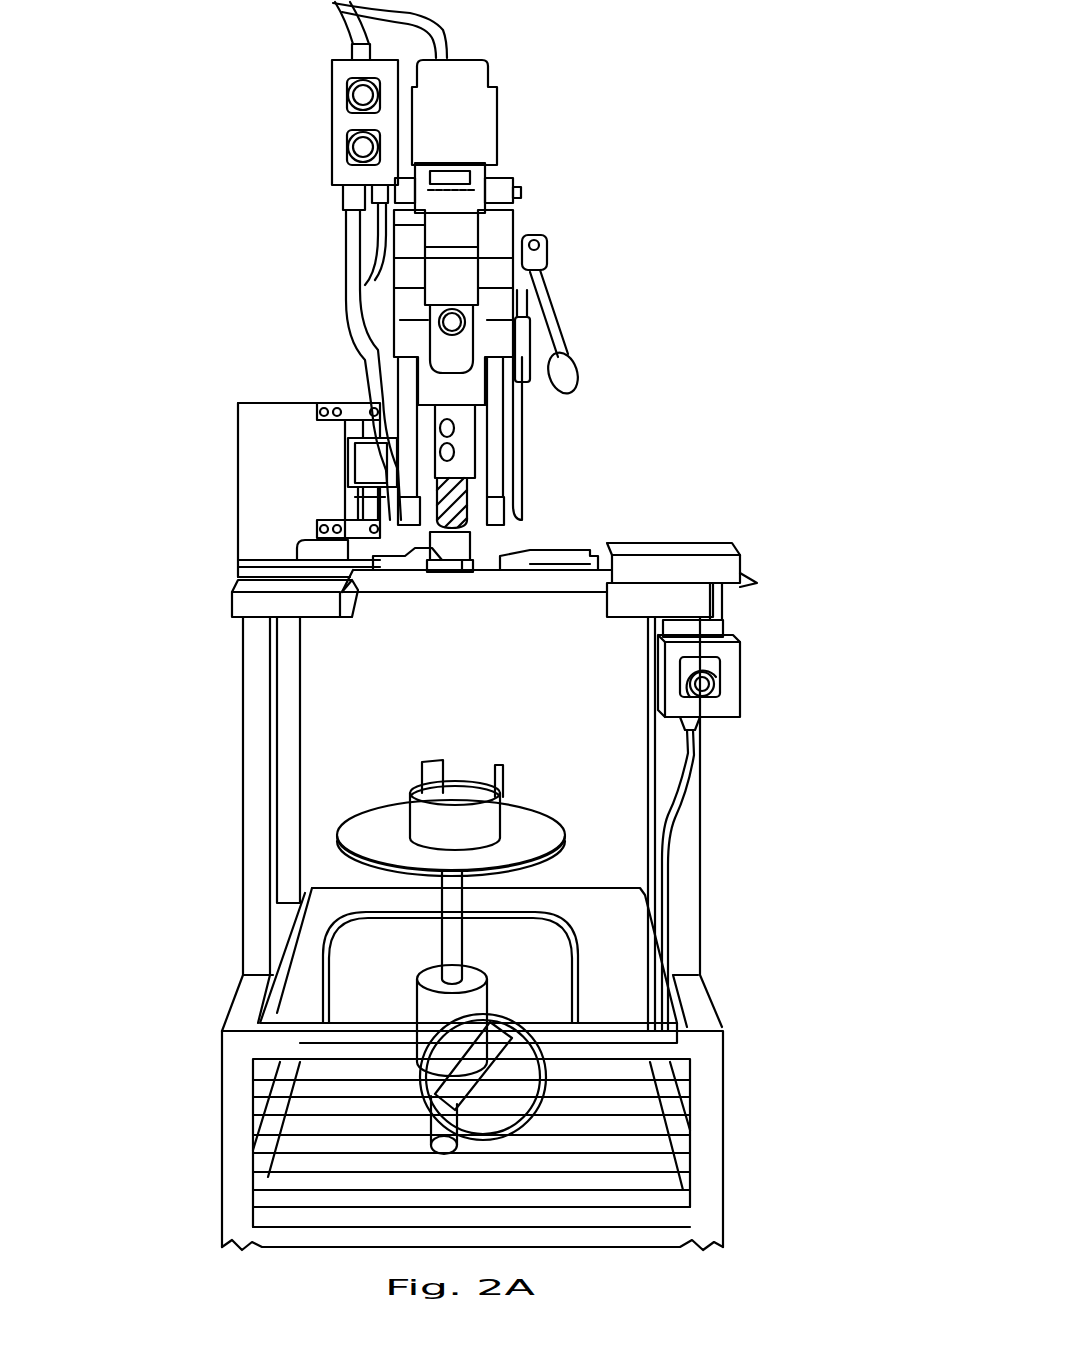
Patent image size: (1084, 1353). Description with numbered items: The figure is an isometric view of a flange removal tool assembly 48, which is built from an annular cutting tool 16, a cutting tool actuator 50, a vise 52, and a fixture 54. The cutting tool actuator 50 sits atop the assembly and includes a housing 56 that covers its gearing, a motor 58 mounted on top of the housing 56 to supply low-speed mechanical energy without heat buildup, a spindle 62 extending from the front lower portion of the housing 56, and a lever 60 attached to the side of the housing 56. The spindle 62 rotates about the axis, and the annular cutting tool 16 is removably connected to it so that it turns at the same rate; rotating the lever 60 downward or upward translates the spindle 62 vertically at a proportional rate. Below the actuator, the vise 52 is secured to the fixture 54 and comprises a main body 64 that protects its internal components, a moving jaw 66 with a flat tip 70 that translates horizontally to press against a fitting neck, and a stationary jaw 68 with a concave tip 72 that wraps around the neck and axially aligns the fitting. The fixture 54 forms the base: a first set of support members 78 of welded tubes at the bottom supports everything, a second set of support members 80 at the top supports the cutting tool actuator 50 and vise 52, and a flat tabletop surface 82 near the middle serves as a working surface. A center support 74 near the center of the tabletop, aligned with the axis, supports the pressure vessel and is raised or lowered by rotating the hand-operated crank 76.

The flange removal tool assembly 48 is at (627, 97).
The motor 58 is at (470, 115).
The housing 56 is at (532, 192).
The cutting tool actuator 50 is at (538, 193).
The lever 60 is at (555, 298).
The spindle 62 is at (462, 437).
The annular cutting tool 16 is at (400, 508).
The stationary jaw 68 is at (413, 565).
The flat tip 70 is at (502, 568).
The concave tip 72 is at (472, 572).
The moving jaw 66 is at (573, 565).
The vise 52 is at (672, 543).
The main body 64 is at (700, 563).
The fixture 54 is at (730, 818).
The second set of support members 80 is at (226, 762).
The flat tabletop surface 82 is at (300, 997).
The center support 74 is at (537, 827).
The crank 76 is at (513, 1130).
The first set of support members 78 is at (735, 1048).